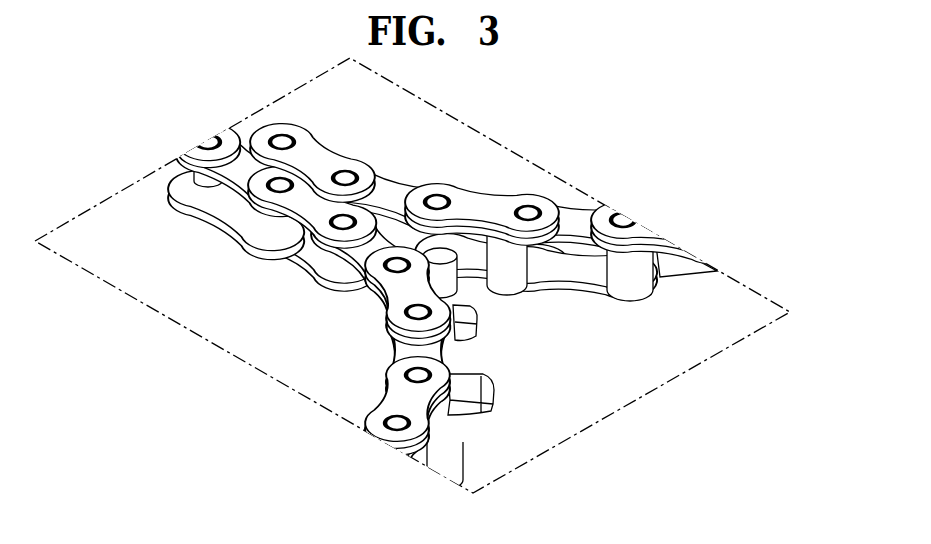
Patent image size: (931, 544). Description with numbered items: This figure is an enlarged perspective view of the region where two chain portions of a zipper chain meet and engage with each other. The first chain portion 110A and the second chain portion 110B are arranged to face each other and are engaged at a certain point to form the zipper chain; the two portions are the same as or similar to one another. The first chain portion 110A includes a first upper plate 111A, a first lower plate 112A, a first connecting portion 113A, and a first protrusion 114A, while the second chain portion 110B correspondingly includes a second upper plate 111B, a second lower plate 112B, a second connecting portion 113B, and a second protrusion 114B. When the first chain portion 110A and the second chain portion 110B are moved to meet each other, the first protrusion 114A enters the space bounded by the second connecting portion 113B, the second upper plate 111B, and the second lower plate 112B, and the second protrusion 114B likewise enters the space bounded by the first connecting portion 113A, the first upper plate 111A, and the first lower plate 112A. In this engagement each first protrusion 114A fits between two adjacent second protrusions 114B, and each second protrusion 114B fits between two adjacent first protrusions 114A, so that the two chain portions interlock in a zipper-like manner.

The first chain portion 110A is at (233, 173).
The second chain portion 110B is at (383, 176).
The first upper plate 111A is at (377, 275).
The second upper plate 111B is at (457, 192).
The first lower plate 112A is at (468, 441).
The second lower plate 112B is at (567, 275).
The first connecting portion 113A is at (380, 423).
The second connecting portion 113B is at (527, 205).
The first protrusion 114A is at (493, 405).
The second protrusion 114B is at (631, 273).